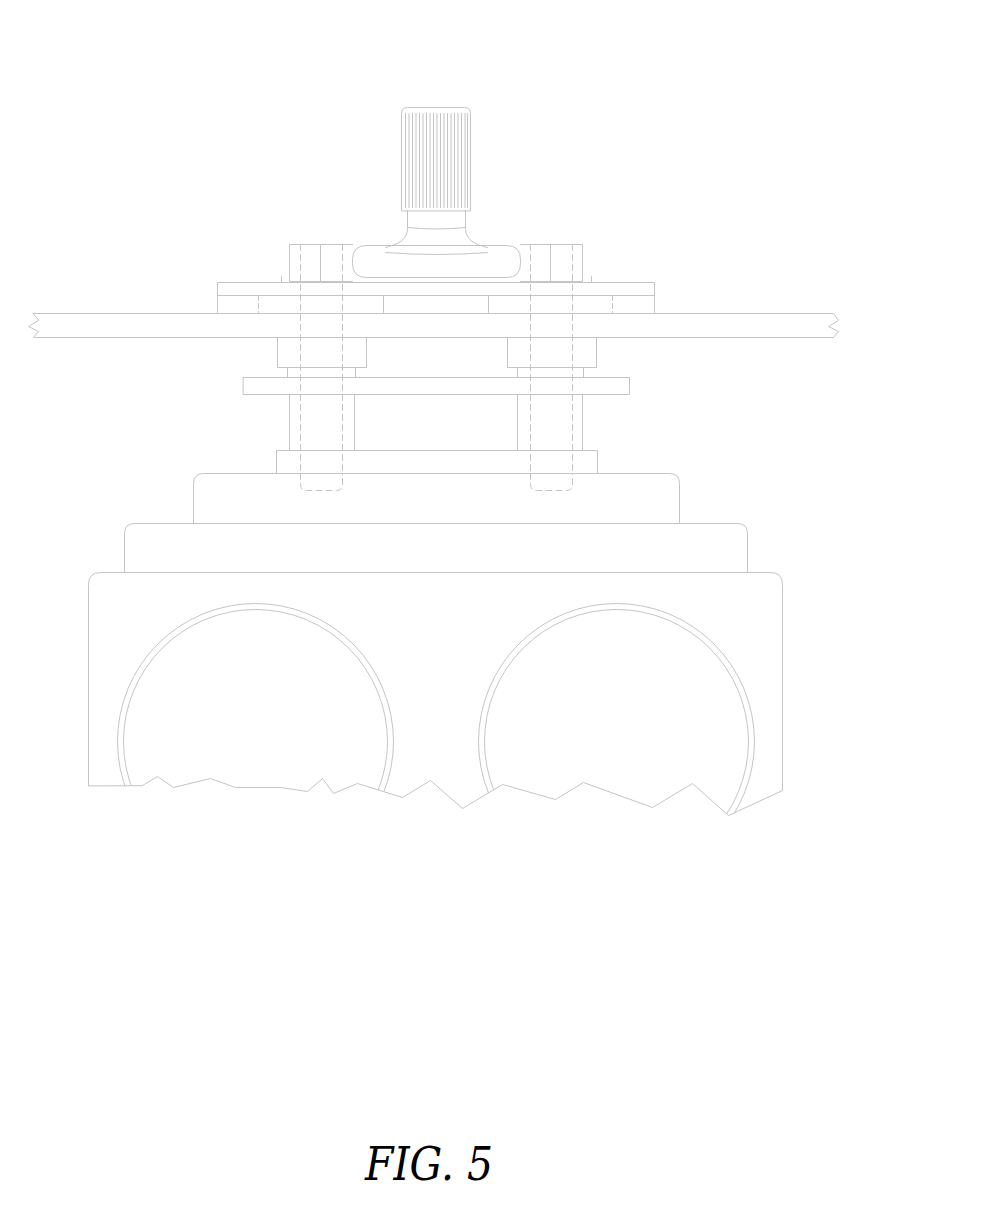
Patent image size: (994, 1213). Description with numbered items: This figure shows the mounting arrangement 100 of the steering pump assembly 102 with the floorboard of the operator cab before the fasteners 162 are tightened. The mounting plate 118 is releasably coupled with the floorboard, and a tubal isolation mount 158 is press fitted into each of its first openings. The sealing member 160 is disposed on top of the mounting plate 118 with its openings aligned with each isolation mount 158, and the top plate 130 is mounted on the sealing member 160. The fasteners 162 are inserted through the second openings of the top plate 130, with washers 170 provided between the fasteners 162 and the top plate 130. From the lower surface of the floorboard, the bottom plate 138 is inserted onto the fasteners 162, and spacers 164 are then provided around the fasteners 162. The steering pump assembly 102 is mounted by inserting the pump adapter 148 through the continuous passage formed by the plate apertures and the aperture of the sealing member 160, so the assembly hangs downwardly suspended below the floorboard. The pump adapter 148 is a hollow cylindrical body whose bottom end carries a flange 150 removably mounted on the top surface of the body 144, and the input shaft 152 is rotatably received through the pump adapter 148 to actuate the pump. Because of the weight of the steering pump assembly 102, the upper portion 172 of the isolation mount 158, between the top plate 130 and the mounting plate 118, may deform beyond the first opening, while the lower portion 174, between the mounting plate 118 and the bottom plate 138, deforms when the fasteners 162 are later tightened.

The mounting arrangement 100 is at (586, 74).
The steering pump assembly 102 is at (716, 834).
The mounting plate 118 is at (755, 323).
The top plate 130 is at (638, 287).
The bottom plate 138 is at (612, 395).
The body 144 is at (200, 498).
The pump adapter 148 is at (418, 363).
The flange 150 is at (287, 462).
The input shaft 152 is at (413, 161).
The isolation mount 158 is at (515, 306).
The sealing member 160 is at (225, 304).
The fasteners 162 is at (572, 256).
The spacers 164 is at (577, 432).
The washers 170 is at (287, 279).
The upper portion 172 is at (640, 304).
The lower portion 174 is at (615, 358).